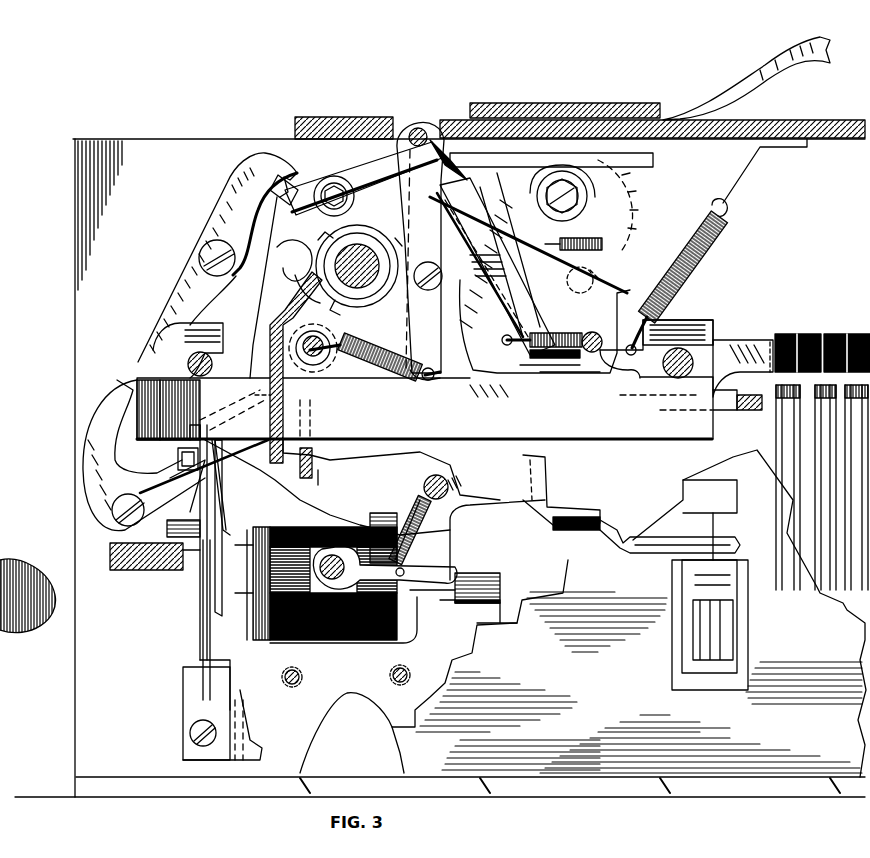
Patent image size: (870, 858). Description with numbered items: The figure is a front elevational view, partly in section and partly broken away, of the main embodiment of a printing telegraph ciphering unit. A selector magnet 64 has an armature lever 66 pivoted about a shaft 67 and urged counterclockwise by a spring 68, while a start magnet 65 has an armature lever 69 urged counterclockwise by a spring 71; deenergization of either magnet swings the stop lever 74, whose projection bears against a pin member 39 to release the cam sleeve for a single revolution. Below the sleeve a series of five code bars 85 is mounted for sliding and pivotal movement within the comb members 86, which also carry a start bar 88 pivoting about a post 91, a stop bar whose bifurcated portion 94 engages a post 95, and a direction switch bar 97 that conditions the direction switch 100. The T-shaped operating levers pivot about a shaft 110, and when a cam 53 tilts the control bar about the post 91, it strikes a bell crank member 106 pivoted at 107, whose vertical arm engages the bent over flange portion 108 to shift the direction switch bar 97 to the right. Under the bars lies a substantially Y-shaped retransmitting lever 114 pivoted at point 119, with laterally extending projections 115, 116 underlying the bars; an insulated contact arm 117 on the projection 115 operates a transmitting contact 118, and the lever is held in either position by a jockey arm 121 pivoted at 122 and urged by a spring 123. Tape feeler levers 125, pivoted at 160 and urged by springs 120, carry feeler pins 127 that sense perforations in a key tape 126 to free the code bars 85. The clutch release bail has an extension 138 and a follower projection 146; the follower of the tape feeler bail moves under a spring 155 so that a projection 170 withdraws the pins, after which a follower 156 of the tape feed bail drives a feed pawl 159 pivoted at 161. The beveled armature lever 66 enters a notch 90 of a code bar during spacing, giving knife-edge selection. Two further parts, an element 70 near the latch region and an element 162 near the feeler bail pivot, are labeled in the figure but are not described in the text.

The pin member 39 is at (300, 190).
The cam 53 is at (424, 264).
The selector magnet 64 is at (318, 637).
The start magnet 65 is at (270, 529).
The armature lever 66 is at (203, 580).
The shaft 67 is at (195, 722).
The spring 68 is at (112, 545).
The armature lever 69 is at (215, 505).
The latch member 70 is at (258, 410).
The spring 71 is at (190, 512).
The stop lever 74 is at (236, 198).
The code bars 85 is at (612, 427).
The comb members 86 is at (728, 410).
The start bar 88 is at (690, 326).
The notch 90 is at (197, 425).
The post 91 is at (665, 370).
The bifurcated portion 94 is at (195, 334).
The post 95 is at (212, 366).
The direction switch bar 97 is at (143, 377).
The direction switch 100 is at (814, 329).
The bell crank member 106 is at (120, 382).
The pivot 107 is at (112, 498).
The bent over flange portion 108 is at (150, 378).
The shaft 110 is at (320, 364).
The retransmitting lever 114 is at (483, 502).
The projection 115 is at (545, 472).
The projection 116 is at (320, 477).
The insulated contact arm 117 is at (622, 553).
The transmitting contact 118 is at (762, 529).
The pivot point 119 is at (440, 475).
The springs 120 is at (555, 333).
The jockey arm 121 is at (430, 594).
The pivot 122 is at (345, 570).
The spring 123 is at (412, 497).
The tape feeler levers 125 is at (483, 297).
The key tape 126 is at (768, 72).
The feeler pins 127 is at (523, 103).
The extension 138 is at (270, 335).
The projection 146 is at (295, 265).
The spring 155 is at (395, 385).
The follower 156 is at (345, 185).
The feed pawl 159 is at (622, 247).
The pivot 160 is at (418, 137).
The pivot 161 is at (295, 487).
The nut 162 is at (630, 187).
The projection 170 is at (541, 263).